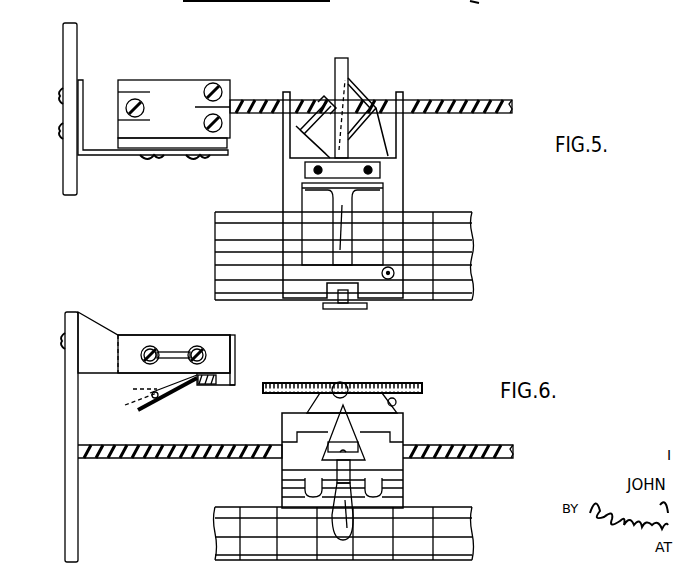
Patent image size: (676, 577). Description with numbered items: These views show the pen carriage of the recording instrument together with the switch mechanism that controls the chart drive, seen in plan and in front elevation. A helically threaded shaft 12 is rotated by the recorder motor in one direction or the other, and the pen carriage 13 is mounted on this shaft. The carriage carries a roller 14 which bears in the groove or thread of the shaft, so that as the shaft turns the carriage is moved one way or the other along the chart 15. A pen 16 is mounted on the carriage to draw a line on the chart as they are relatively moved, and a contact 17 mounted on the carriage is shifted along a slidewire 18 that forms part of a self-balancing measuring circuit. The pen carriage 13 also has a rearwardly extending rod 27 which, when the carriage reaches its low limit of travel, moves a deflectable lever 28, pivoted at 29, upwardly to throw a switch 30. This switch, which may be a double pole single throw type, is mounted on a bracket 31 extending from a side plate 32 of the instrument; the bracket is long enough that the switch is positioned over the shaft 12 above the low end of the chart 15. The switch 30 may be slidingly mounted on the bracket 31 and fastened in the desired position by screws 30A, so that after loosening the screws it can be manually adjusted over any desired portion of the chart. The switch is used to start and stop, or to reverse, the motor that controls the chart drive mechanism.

In FIG. 5, the helically threaded shaft 12 is at (437, 100).
In FIG. 6, the helically threaded shaft 12 is at (438, 447).
In FIG. 5, the pen carriage 13 is at (292, 185).
In FIG. 6, the pen carriage 13 is at (287, 459).
In FIG. 5, the roller 14 is at (321, 98).
In FIG. 5, the chart 15 is at (464, 226).
In FIG. 6, the chart 15 is at (228, 513).
In FIG. 5, the pen 16 is at (346, 202).
In FIG. 6, the pen 16 is at (352, 502).
In FIG. 6, the contact 17 is at (335, 387).
In FIG. 6, the slidewire 18 is at (400, 383).
In FIG. 5, the rearwardly extending rod 27 is at (348, 62).
In FIG. 6, the rearwardly extending rod 27 is at (130, 396).
In FIG. 6, the deflectable lever 28 is at (157, 403).
In FIG. 6, the pivot 29 is at (211, 388).
In FIG. 5, the switch 30 is at (176, 83).
In FIG. 6, the switch 30 is at (152, 335).
In FIG. 5, the screws 30A is at (200, 158).
In FIG. 6, the screws 30A is at (196, 344).
In FIG. 5, the bracket 31 is at (140, 155).
In FIG. 6, the bracket 31 is at (90, 330).
In FIG. 5, the side plate 32 is at (68, 58).
In FIG. 6, the side plate 32 is at (70, 418).